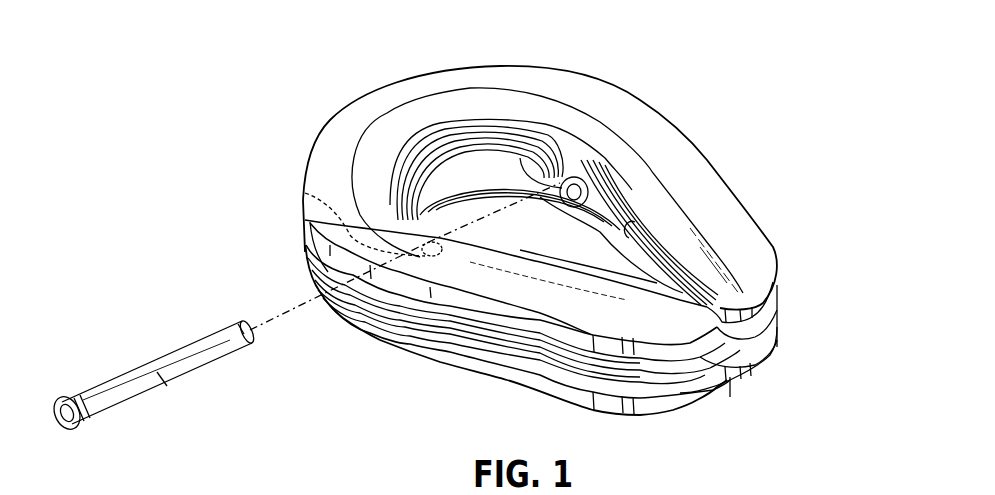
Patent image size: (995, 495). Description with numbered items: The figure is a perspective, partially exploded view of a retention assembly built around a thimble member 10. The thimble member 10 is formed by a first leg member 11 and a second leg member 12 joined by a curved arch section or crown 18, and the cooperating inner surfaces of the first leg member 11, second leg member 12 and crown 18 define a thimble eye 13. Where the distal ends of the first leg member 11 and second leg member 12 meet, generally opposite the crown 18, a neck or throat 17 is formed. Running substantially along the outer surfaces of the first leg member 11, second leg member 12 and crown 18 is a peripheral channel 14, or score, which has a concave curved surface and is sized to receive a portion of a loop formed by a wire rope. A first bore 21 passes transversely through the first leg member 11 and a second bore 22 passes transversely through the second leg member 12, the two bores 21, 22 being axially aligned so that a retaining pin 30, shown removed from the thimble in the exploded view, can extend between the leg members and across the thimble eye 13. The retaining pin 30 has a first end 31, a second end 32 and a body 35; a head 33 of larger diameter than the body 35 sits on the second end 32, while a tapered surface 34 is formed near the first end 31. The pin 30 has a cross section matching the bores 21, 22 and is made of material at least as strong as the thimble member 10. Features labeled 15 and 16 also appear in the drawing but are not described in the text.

The thimble member 10 is at (668, 50).
The first leg member 11 is at (485, 273).
The second leg member 12 is at (712, 223).
The thimble eye 13 is at (580, 257).
The peripheral channel 14 is at (427, 326).
The middle groove 15 is at (540, 257).
The slot 16 is at (633, 223).
The neck 17 is at (722, 377).
The crown 18 is at (360, 113).
The first bore 21 is at (305, 192).
The second bore 22 is at (520, 172).
The retaining pin 30 is at (150, 358).
The first end 31 is at (252, 332).
The second end 32 is at (60, 414).
The head 33 is at (70, 390).
The tapered surface 34 is at (245, 328).
The body 35 is at (160, 378).